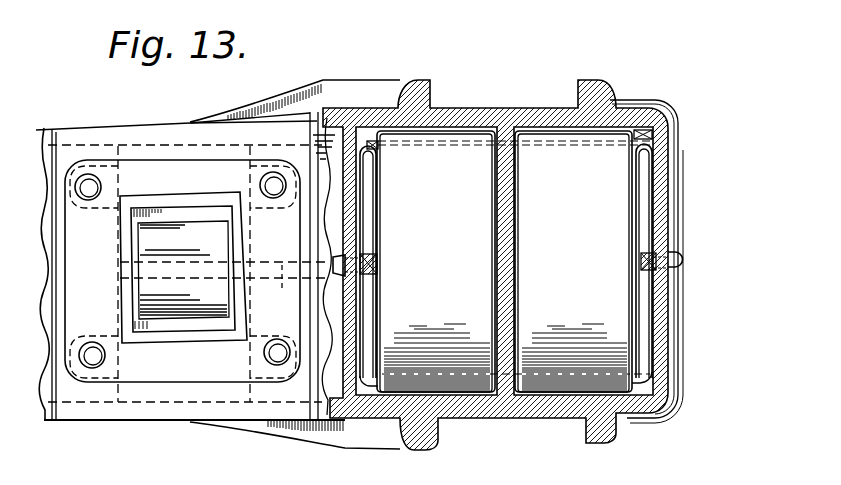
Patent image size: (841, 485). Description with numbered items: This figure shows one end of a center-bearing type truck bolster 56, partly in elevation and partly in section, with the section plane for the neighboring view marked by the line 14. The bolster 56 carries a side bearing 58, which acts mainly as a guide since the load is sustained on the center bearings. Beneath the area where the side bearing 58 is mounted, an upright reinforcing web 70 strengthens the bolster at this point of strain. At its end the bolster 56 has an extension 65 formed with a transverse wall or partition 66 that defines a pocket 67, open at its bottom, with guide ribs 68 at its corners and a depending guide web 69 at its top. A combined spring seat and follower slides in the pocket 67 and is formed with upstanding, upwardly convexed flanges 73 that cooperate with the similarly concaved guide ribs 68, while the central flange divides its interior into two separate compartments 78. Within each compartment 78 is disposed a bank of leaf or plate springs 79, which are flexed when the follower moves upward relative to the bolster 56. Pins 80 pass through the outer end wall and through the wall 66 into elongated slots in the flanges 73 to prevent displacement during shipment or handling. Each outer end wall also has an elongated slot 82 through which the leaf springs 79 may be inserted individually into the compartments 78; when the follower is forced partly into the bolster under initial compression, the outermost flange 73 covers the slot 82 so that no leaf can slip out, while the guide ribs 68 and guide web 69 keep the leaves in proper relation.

The section line 14— 14 is at (373, 100).
The bolster 56 is at (120, 421).
The side bearing 58 is at (120, 290).
The extension 65 is at (639, 108).
The transverse wall or partition 66 is at (353, 212).
The pocket 67 is at (475, 133).
The guide ribs 68 is at (378, 148).
The depending guide web 69 is at (508, 208).
The upright reinforcing web 70 is at (182, 271).
The upstanding flange 73 is at (372, 305).
The compartments 78 is at (375, 193).
The leaf or plate springs 79 is at (505, 312).
The pins 80 is at (333, 262).
The elongated slot 82 is at (664, 406).